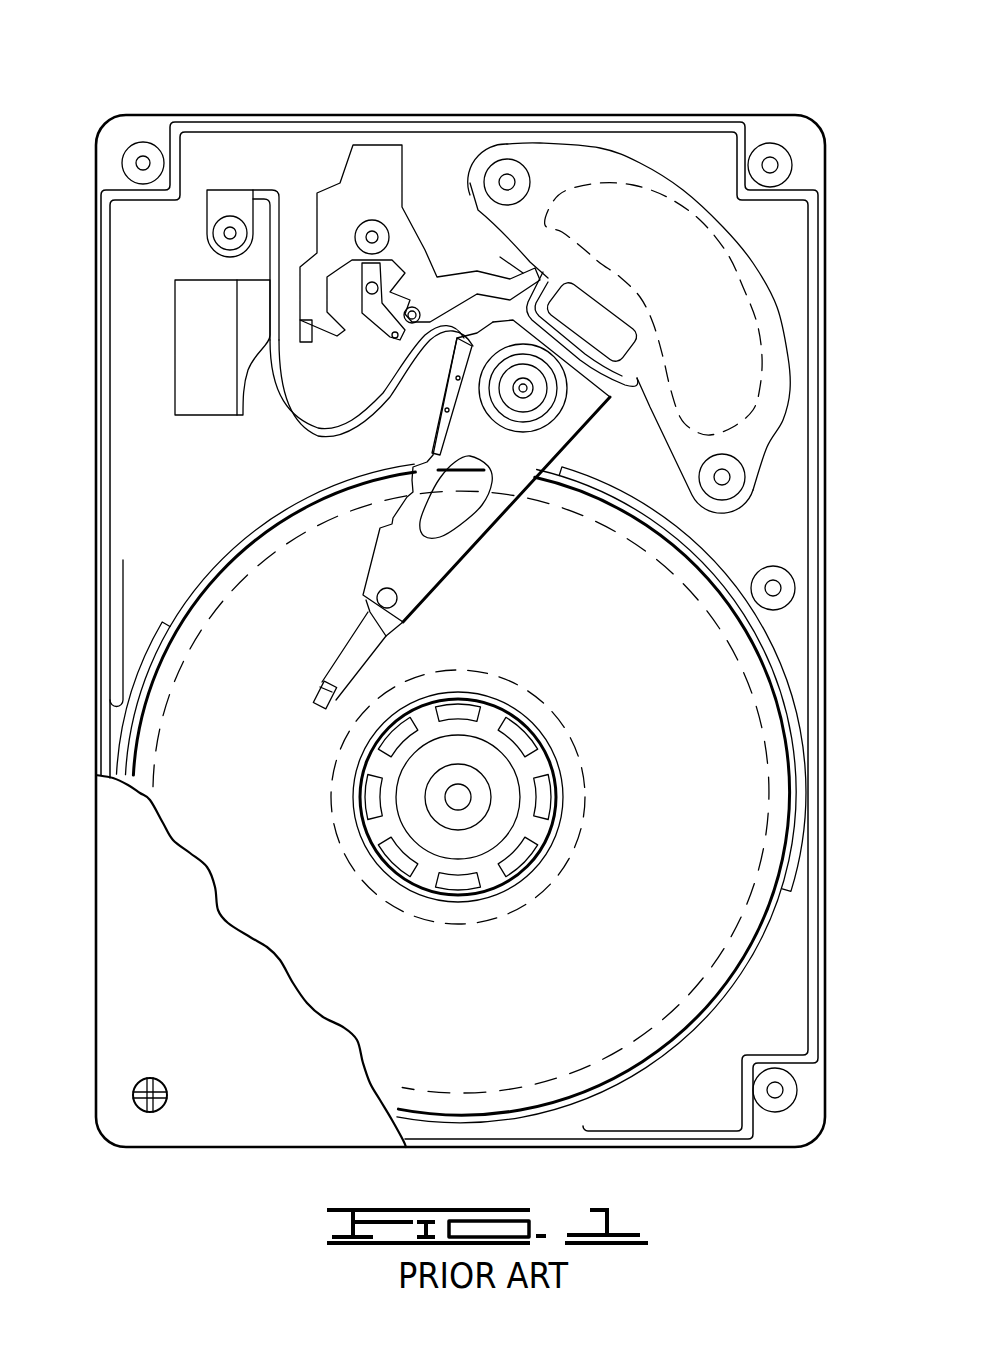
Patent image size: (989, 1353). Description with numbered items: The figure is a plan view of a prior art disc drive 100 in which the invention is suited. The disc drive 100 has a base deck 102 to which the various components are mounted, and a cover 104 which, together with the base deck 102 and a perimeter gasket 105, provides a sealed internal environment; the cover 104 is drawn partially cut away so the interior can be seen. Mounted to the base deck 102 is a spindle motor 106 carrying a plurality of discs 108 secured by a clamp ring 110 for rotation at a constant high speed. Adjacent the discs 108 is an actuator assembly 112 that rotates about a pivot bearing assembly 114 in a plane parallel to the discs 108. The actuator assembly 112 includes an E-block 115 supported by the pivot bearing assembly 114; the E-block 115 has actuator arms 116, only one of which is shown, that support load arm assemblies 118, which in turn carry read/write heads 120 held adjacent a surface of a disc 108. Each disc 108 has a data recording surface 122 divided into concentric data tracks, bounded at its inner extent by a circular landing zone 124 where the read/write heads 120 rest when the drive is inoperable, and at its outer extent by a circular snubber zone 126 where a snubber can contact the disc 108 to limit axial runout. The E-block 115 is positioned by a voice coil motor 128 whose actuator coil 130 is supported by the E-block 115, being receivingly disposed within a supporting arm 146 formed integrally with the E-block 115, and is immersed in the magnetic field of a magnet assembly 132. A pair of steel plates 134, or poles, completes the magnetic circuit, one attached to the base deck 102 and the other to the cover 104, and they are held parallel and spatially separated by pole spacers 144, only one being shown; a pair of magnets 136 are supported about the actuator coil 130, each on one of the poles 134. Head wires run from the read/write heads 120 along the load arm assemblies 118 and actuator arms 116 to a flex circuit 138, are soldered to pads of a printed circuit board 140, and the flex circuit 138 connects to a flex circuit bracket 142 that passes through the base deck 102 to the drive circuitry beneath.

The disc drive 100 is at (212, 88).
The base deck 102 is at (195, 485).
The cover 104 is at (152, 965).
The perimeter gasket 105 is at (745, 122).
The spindle motor 106 is at (471, 830).
The discs 108 is at (790, 735).
The clamp ring 110 is at (535, 767).
The actuator assembly 112 is at (499, 472).
The pivot bearing assembly 114 is at (549, 415).
The E-block 115 is at (585, 417).
The actuator arms 116 is at (393, 575).
The load arm assemblies 118 is at (345, 660).
The read/write heads 120 is at (312, 697).
The data recording surface 122 is at (712, 890).
The landing zone 124 is at (340, 840).
The snubber zone 126 is at (205, 605).
The voice coil motor 128 is at (554, 206).
The actuator coil 130 is at (548, 295).
The magnet assembly 132 is at (767, 433).
The steel plates 134 is at (778, 358).
The magnets 136 is at (752, 272).
The flex circuit 138 is at (310, 432).
The printed circuit board 140 is at (430, 425).
The flex circuit bracket 142 is at (178, 355).
The pole spacers 144 is at (487, 170).
The supporting arm 146 is at (528, 275).